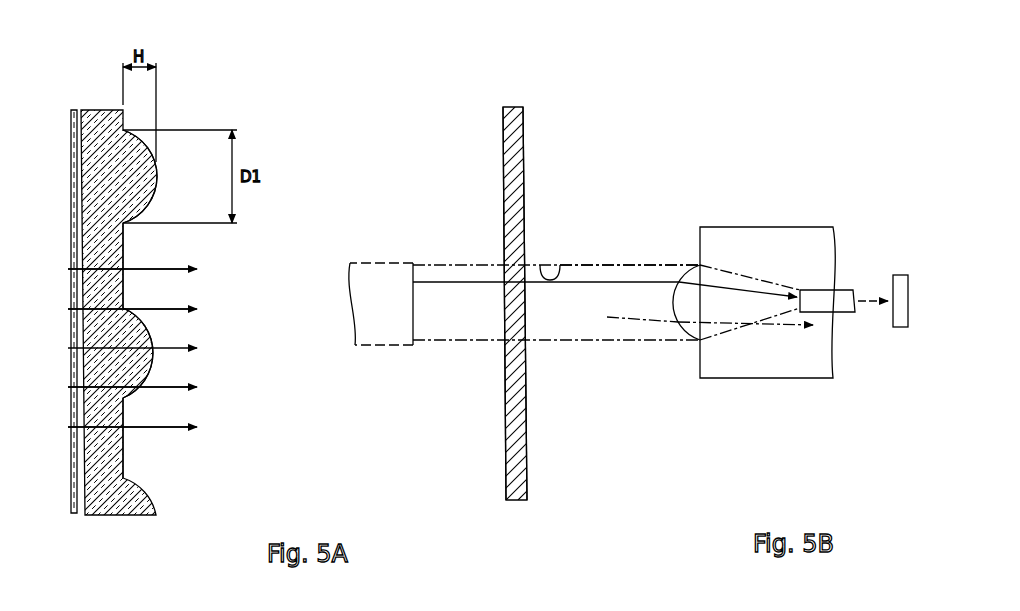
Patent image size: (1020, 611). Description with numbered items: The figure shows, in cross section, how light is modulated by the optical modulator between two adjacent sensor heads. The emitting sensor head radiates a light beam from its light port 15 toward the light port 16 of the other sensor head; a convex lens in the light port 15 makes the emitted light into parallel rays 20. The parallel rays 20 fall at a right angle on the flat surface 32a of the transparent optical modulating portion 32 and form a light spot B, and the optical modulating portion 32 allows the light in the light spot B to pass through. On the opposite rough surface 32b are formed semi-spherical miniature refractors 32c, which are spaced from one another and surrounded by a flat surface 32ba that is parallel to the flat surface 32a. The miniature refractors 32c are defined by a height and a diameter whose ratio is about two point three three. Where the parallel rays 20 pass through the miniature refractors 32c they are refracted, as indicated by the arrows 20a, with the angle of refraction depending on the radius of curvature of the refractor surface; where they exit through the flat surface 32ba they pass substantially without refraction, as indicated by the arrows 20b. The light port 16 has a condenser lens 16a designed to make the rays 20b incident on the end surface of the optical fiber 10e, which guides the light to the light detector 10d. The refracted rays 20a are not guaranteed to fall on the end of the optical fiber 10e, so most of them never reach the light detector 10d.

In FIG. 5A, the transparent optical modulating portion 32 is at (113, 502).
In FIG. 5B, the transparent optical modulating portion 32 is at (515, 112).
In FIG. 5A, the flat surface 32a is at (75, 112).
In FIG. 5B, the flat surface 32a is at (504, 144).
In FIG. 5B, the rough surface 32b is at (525, 145).
In FIG. 5A, the miniature refractor 32c is at (150, 205).
In FIG. 5A, the flat surface 32ba is at (127, 283).
In FIG. 5A, the parallel rays 20 is at (68, 269).
In FIG. 5B, the parallel rays 20 is at (458, 278).
In FIG. 5A, the refracted rays 20a is at (185, 317).
In FIG. 5B, the refracted rays 20a is at (613, 320).
In FIG. 5A, the rays output from the flat surface 20b is at (180, 268).
In FIG. 5B, the rays output from the flat surface 20b is at (613, 278).
In FIG. 5B, the light port 15 is at (413, 307).
In FIG. 5B, the light port 16 is at (772, 380).
In FIG. 5B, the condenser lens 16a is at (687, 330).
In FIG. 5B, the optical fiber 10e is at (823, 312).
In FIG. 5B, the light detector 10d is at (903, 328).
In FIG. 5B, the light spot B is at (562, 280).